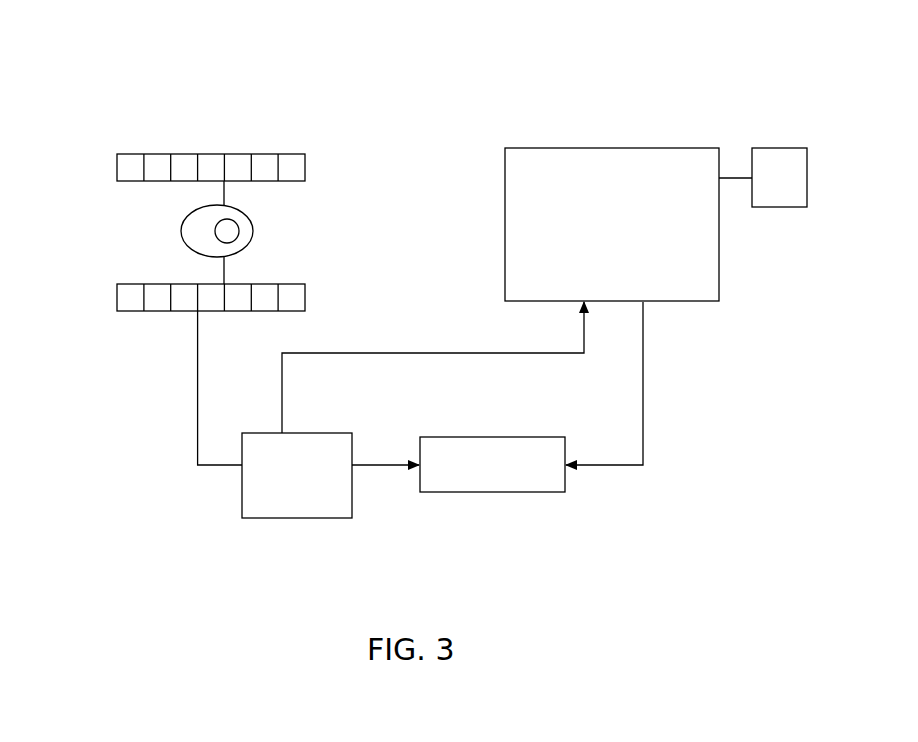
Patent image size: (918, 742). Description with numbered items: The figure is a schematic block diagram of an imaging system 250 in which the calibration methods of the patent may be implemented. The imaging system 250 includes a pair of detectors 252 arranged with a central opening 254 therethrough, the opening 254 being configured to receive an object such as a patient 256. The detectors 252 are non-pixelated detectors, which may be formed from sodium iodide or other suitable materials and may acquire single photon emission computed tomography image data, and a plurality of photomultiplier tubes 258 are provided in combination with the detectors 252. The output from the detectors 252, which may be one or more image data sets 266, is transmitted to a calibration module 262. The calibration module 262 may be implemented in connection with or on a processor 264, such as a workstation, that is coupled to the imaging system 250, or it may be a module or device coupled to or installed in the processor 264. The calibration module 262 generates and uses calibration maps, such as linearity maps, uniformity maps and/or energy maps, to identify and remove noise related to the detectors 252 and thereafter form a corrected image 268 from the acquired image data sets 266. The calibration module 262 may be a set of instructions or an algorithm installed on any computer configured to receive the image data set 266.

The imaging system 250 is at (693, 63).
The detectors 252 is at (278, 150).
The central opening 254 is at (122, 198).
The patient 256 is at (180, 233).
The photomultiplier tubes 258 is at (157, 158).
The calibration module 262 is at (612, 147).
The processor 264 is at (492, 495).
The image data set 266 is at (297, 520).
The corrected image 268 is at (779, 147).